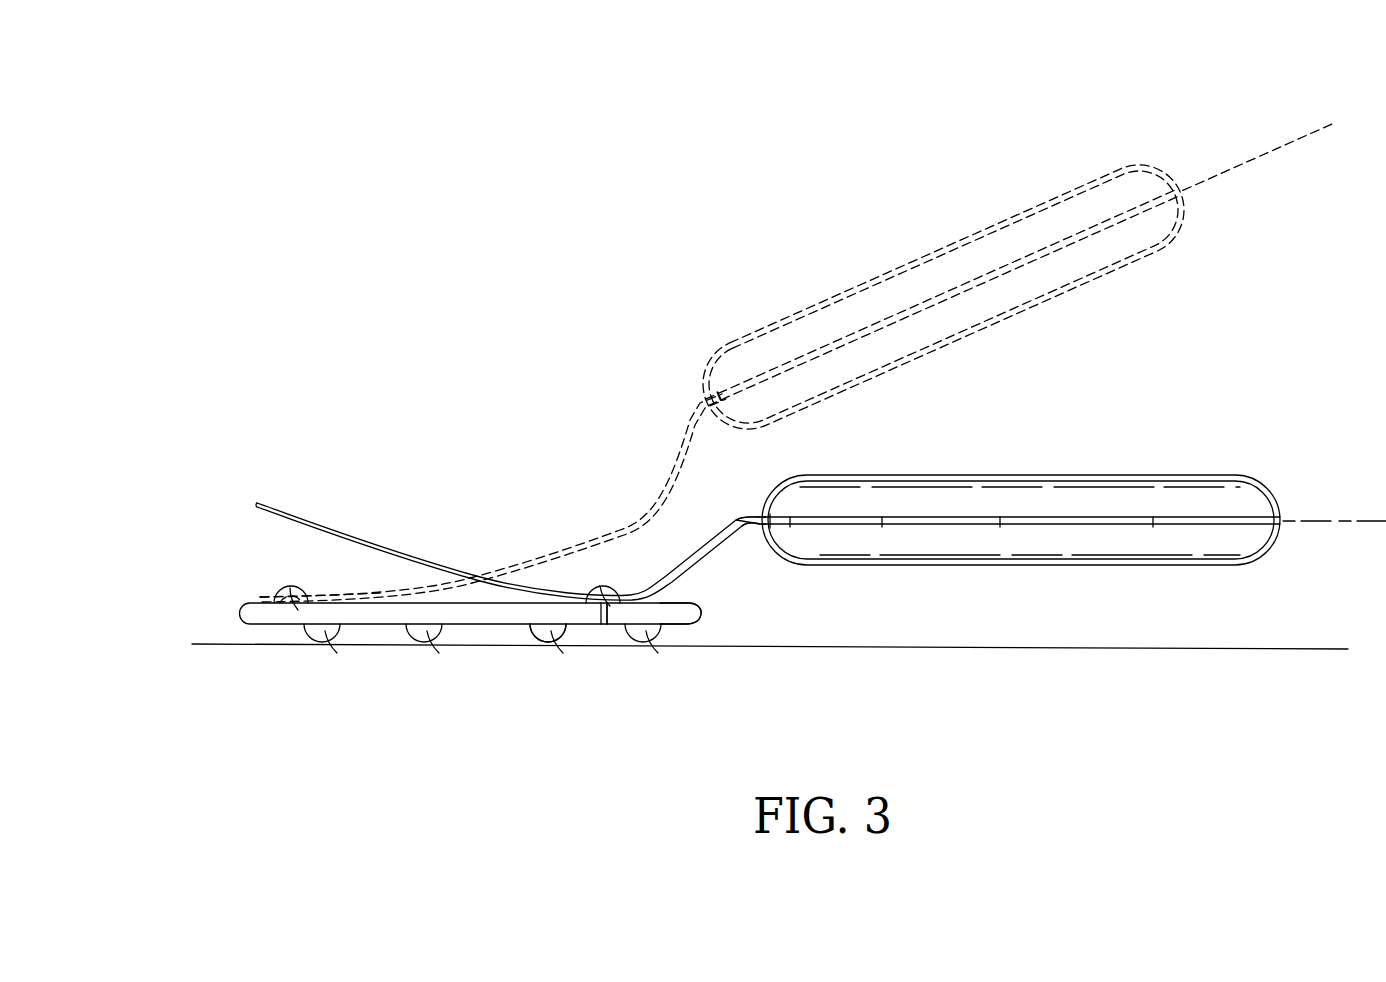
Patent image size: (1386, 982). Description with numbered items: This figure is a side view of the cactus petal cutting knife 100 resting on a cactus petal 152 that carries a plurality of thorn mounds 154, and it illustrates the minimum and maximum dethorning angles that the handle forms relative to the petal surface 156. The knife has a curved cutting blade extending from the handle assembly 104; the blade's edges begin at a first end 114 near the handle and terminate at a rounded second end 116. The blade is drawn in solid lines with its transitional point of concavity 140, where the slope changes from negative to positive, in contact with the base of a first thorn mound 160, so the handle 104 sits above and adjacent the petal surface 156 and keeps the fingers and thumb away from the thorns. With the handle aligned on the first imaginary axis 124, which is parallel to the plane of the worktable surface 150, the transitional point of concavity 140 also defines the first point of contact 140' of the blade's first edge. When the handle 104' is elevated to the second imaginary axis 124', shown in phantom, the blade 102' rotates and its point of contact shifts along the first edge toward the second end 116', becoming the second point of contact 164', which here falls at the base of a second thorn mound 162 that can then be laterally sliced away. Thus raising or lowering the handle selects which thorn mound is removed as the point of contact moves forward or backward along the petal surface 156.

The cactus petal cutting knife 100 is at (653, 146).
The cutting blade in elevated position 102' is at (493, 497).
The handle assembly 104 is at (1021, 503).
The handle in elevated position 104' is at (944, 297).
The first end of cutting blade 114 is at (745, 515).
The second end of cutting blade 116 is at (509, 516).
The second end of cutting blade in elevated position 116' is at (272, 580).
The first imaginary axis 124 is at (1334, 501).
The second imaginary axis 124' is at (1257, 147).
The transitional point of concavity 140 is at (580, 660).
The first point of contact 140' is at (662, 649).
The worktable surface 150 is at (1194, 646).
The cactus petal 152 is at (470, 614).
The thorn mounds 154 is at (528, 632).
The petal surface 156 is at (690, 601).
The first thorn mound 160 is at (595, 585).
The second thorn mound 162 is at (285, 600).
The second point of contact 164' is at (262, 648).